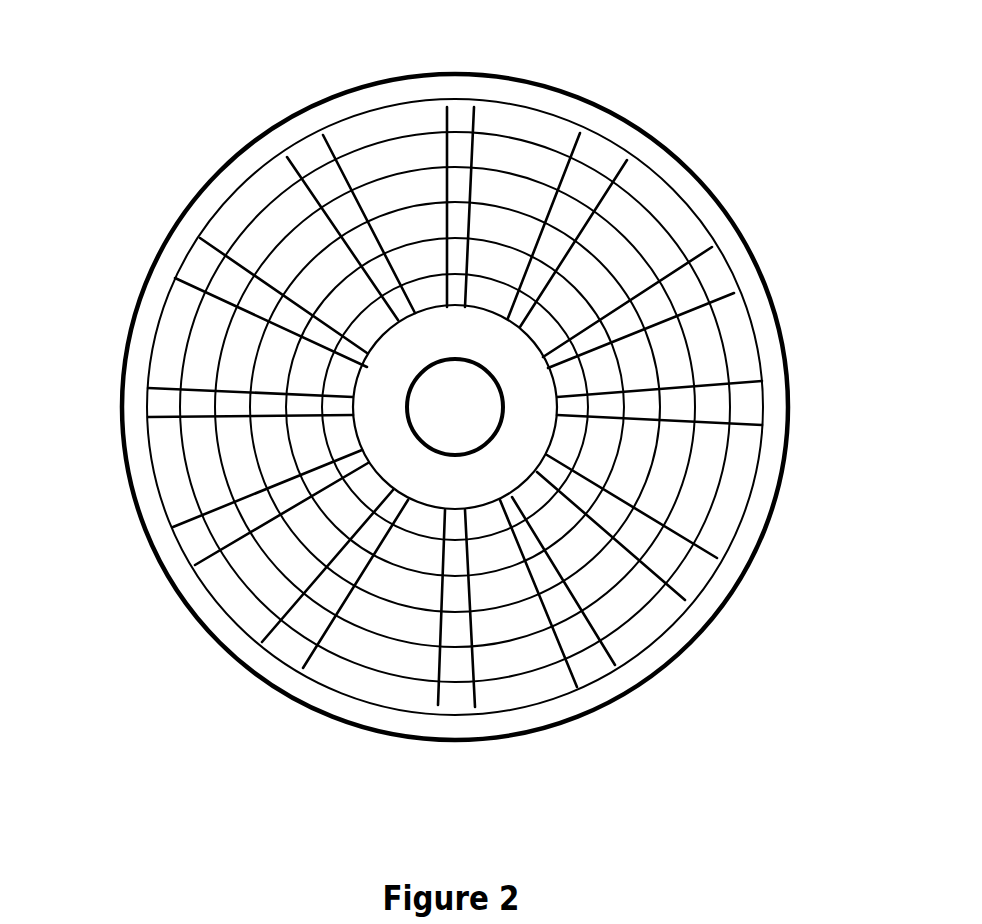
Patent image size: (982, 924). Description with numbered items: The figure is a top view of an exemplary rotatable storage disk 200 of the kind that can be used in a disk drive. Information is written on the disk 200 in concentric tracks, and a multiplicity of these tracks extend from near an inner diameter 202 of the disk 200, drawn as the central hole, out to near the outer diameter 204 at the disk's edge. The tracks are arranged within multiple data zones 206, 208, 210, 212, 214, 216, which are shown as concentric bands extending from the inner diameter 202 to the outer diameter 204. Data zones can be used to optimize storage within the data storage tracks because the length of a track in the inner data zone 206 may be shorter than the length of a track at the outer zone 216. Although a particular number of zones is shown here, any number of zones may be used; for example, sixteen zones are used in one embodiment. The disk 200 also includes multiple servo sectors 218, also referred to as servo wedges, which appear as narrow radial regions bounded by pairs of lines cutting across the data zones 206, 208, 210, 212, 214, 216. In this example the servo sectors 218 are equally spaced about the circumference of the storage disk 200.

The rotatable storage disk 200 is at (150, 815).
The inner diameter 202 is at (403, 397).
The outer diameter 204 is at (228, 178).
The inner data zone 206 is at (420, 293).
The data zone 208 is at (487, 260).
The data zone 210 is at (583, 275).
The data zone 212 is at (672, 347).
The data zone 214 is at (707, 472).
The outer zone 216 is at (660, 610).
The servo sectors 218 is at (457, 127).